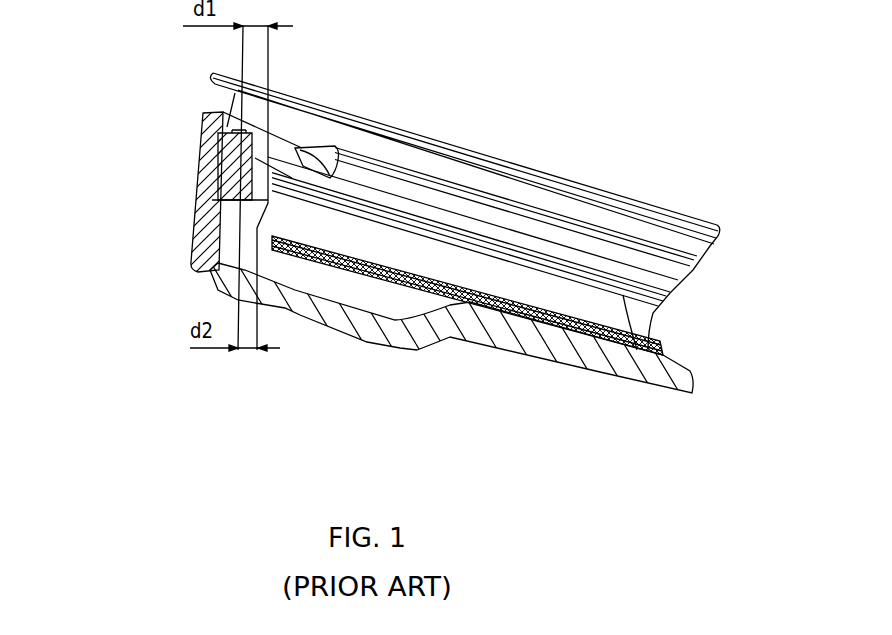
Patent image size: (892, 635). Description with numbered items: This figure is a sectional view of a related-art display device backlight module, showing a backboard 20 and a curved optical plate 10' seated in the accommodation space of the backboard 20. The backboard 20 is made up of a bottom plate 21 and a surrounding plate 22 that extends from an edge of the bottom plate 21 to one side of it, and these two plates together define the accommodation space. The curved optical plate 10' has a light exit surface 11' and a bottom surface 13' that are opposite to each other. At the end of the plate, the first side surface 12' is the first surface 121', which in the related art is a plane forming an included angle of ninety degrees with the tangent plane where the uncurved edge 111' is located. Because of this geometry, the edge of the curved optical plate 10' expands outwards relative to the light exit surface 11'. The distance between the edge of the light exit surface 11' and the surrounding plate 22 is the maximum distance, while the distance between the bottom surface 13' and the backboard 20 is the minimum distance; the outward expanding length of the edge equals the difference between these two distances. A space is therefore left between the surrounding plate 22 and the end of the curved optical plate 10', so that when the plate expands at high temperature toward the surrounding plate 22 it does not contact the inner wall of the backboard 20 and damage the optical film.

The curved optical plate 10' is at (464, 263).
The light exit surface 11' is at (667, 339).
The bottom surface 13' is at (467, 339).
The uncurved edge 111' is at (328, 109).
The first side surface 12' is at (147, 174).
The first surface 121' is at (147, 174).
The backboard 20 is at (146, 65).
The bottom plate 21 is at (330, 313).
The surrounding plate 22 is at (213, 252).